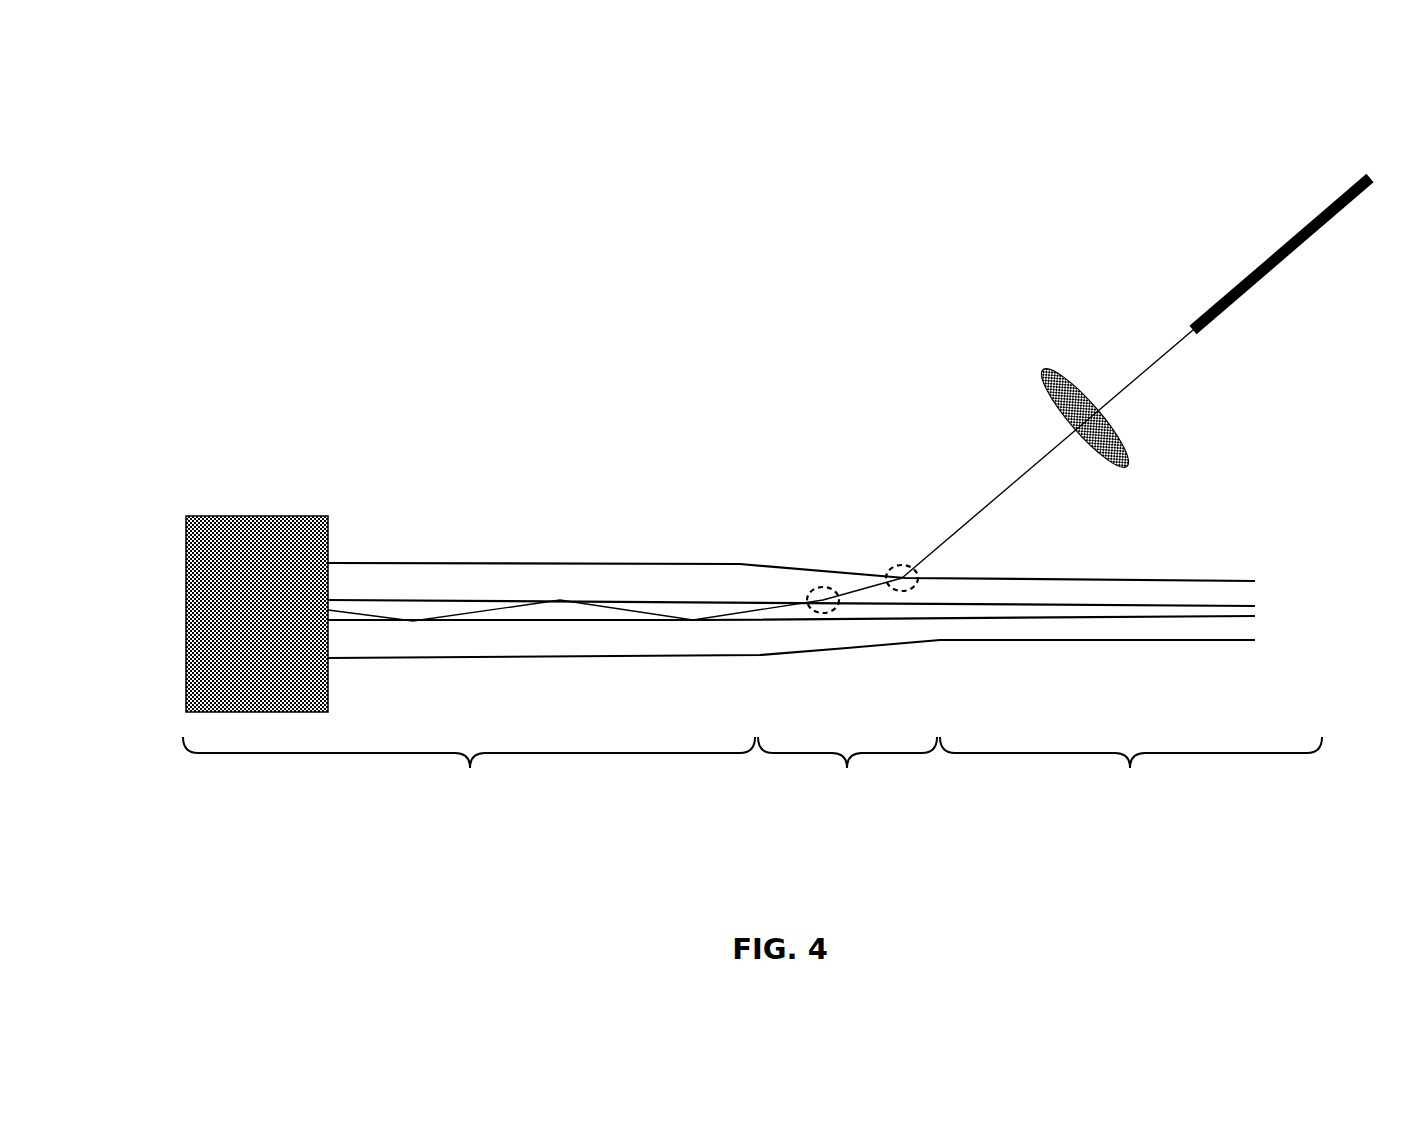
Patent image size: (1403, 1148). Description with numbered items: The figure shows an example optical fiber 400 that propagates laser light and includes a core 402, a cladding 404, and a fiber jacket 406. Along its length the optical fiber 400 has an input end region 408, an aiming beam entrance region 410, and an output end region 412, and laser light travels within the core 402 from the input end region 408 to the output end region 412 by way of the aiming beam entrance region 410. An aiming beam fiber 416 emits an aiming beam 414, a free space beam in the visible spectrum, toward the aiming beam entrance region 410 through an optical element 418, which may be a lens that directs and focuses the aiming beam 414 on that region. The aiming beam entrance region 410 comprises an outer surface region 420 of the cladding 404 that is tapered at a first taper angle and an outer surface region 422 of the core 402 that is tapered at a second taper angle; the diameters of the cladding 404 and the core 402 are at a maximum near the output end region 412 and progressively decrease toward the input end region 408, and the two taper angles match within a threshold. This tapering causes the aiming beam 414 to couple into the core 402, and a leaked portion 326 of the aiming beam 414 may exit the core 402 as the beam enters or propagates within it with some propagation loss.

The optical fiber 400 is at (294, 65).
The leaked portion 326 is at (791, 672).
The core 402 is at (561, 616).
The cladding 404 is at (584, 579).
The fiber jacket 406 is at (291, 549).
The input end region 408 is at (1131, 770).
The aiming beam entrance region 410 is at (847, 770).
The output end region 412 is at (469, 770).
The aiming beam 414 is at (954, 531).
The aiming beam fiber 416 is at (1302, 259).
The optical element 418 is at (1131, 458).
The outer surface region of the cladding 420 is at (887, 567).
The outer surface region of the core 422 is at (826, 614).